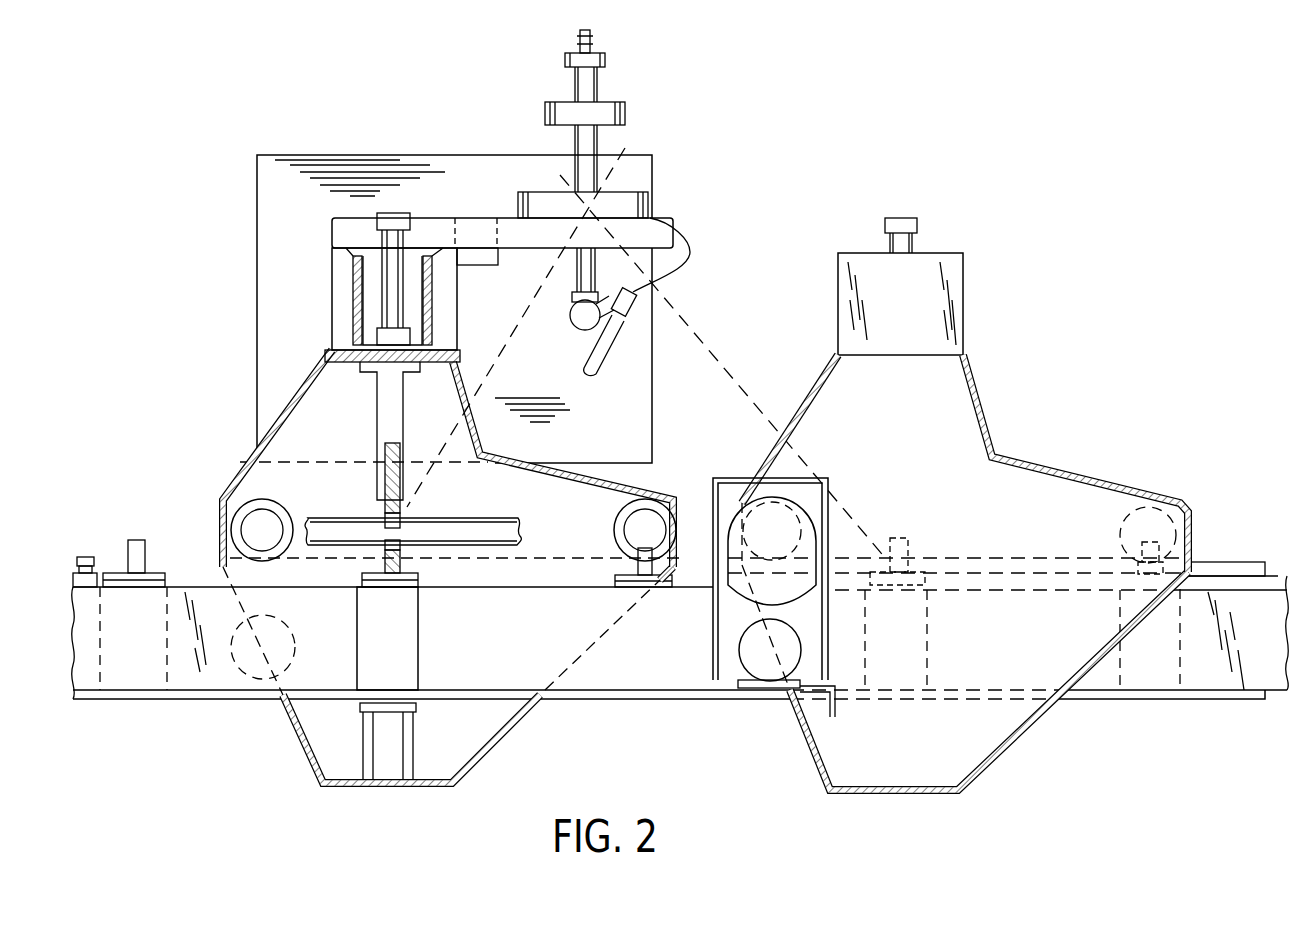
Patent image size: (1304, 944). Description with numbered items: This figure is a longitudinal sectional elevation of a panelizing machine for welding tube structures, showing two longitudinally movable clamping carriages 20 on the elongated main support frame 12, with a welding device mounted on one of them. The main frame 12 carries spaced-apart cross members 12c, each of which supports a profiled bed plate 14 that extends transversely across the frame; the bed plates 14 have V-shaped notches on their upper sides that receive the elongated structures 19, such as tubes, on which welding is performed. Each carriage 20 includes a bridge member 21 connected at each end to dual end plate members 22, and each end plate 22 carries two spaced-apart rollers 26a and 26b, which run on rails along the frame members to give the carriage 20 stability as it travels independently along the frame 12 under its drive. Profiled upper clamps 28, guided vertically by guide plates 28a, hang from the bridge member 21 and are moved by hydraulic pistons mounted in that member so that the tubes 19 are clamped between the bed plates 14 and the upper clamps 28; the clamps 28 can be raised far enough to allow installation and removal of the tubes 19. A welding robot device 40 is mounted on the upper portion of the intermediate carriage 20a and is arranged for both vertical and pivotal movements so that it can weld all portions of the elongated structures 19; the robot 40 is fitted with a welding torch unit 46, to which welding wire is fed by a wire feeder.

The main support frame 12 is at (207, 693).
The cross member 12c is at (135, 677).
The profiled bed plate 14 is at (138, 545).
The elongated structure 19 is at (495, 514).
The clamping carriage 20 is at (963, 318).
The intermediate carriage 20a is at (312, 378).
The bridge member 21 is at (350, 290).
The end plate member 22 is at (508, 740).
The roller 26a is at (260, 523).
The roller 26b is at (645, 518).
The profiled upper clamp 28 is at (387, 514).
The guide plate 28a is at (375, 400).
The welding robot device 40 is at (604, 84).
The welding torch unit 46 is at (312, 154).